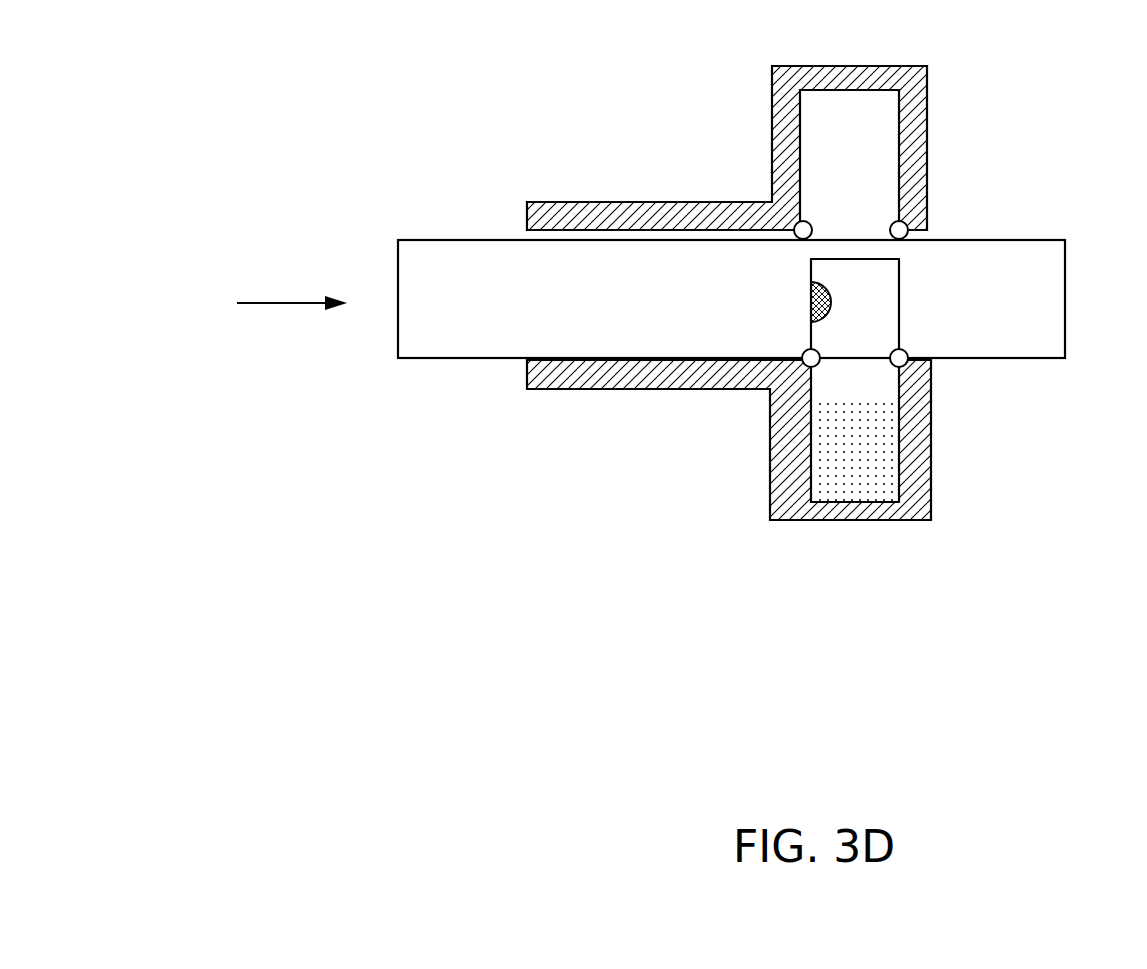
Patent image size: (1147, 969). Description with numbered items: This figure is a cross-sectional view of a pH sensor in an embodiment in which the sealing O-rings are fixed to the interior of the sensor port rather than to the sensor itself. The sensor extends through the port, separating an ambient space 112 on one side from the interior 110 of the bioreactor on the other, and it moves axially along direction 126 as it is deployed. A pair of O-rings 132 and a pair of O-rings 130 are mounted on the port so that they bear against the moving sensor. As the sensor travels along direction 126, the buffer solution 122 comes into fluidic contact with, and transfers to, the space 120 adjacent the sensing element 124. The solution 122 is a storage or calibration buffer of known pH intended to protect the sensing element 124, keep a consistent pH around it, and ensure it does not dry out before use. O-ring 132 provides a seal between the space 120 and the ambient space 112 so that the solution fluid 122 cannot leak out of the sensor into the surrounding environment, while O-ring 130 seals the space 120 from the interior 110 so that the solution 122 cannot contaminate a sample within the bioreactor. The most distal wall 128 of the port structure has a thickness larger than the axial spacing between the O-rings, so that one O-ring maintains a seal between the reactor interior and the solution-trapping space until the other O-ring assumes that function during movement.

The interior of the bioreactor 110 is at (1142, 301).
The ambient space 112 is at (792, 272).
The space 120 is at (835, 393).
The calibration solution 122 is at (848, 460).
The sensing element 124 is at (828, 288).
The direction 126 is at (288, 303).
The wall 128 is at (927, 100).
The O-ring 130 is at (906, 236).
The O-ring 132 is at (803, 352).